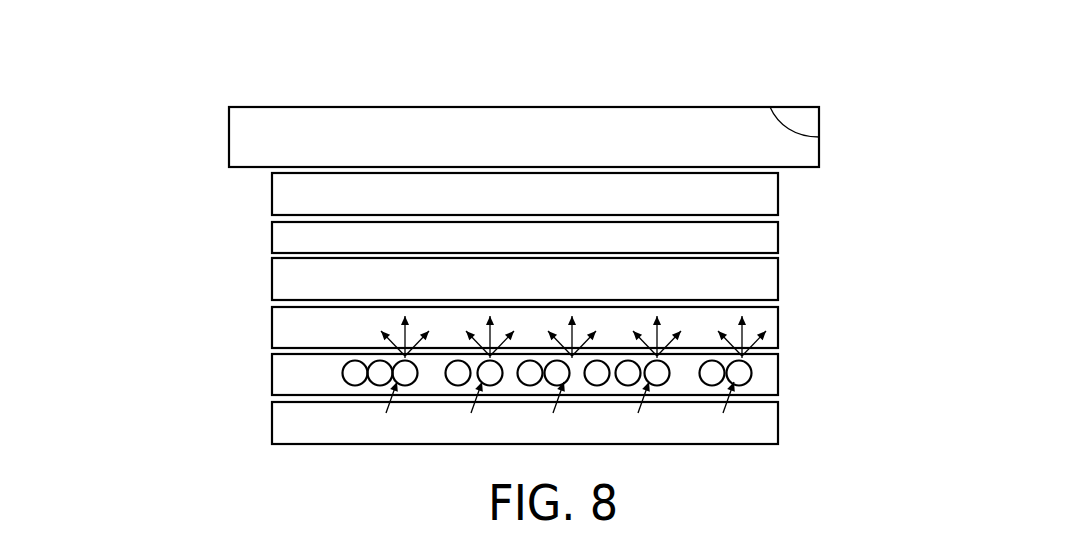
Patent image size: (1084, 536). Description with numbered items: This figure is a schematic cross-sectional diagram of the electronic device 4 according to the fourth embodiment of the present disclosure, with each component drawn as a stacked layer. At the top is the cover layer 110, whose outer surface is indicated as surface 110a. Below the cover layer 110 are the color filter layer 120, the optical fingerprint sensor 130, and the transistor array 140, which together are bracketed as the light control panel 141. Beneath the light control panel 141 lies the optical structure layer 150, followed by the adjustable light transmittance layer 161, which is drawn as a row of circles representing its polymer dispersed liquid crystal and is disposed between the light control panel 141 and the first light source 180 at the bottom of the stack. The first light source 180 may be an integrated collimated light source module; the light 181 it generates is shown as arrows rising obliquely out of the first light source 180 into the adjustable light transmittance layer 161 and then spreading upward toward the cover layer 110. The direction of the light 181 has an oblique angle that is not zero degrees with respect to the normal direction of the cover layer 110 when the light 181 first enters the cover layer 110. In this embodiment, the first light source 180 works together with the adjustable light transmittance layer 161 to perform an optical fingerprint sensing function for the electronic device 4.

The electronic device 4 is at (790, 58).
The cover layer 110 is at (245, 134).
The surface of cover plate 110a is at (819, 137).
The color filter layer 120 is at (277, 194).
The optical fingerprint sensor 130 is at (275, 233).
The transistor array 140 is at (277, 278).
The light control panel 141 is at (132, 183).
The optical structure layer 150 is at (275, 329).
The adjustable light transmittance layer 161 is at (275, 378).
The first light source 180 is at (275, 425).
The light 181 is at (750, 357).